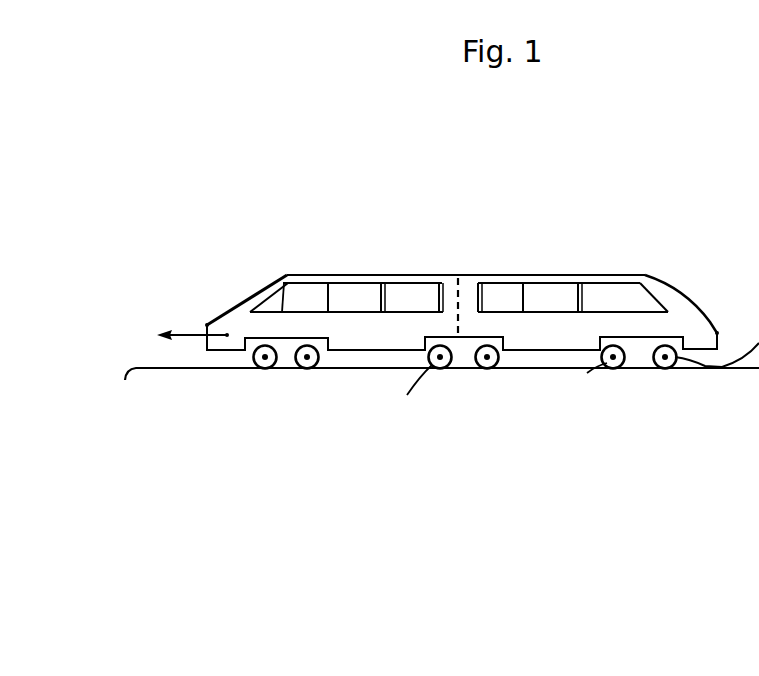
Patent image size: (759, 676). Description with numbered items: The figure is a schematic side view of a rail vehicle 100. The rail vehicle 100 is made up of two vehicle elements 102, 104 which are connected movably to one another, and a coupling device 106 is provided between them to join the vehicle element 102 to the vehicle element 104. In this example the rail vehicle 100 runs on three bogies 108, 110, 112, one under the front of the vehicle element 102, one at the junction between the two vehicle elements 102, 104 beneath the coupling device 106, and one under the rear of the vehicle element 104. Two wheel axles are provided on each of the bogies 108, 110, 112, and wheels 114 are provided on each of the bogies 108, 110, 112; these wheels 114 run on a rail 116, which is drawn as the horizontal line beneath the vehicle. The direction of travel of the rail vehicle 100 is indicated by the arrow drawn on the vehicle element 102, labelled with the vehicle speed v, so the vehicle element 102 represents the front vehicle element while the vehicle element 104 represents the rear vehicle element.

The rail vehicle 100 is at (449, 292).
The vehicle element 102 is at (290, 275).
The vehicle element 104 is at (622, 277).
The coupling device 106 is at (460, 277).
The bogie 108 is at (270, 366).
The bogie 110 is at (462, 362).
The bogie 112 is at (639, 354).
The wheels 114 is at (258, 367).
The rail 116 is at (412, 371).